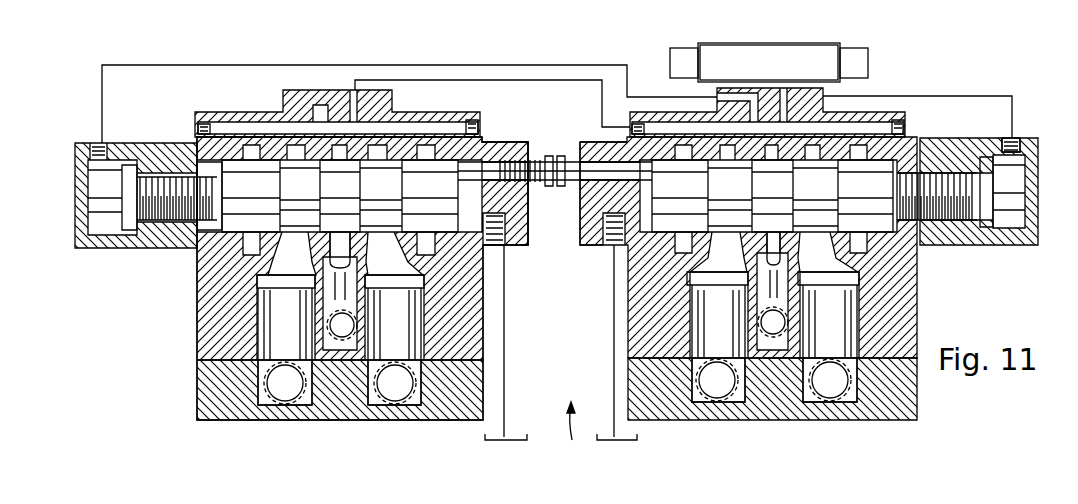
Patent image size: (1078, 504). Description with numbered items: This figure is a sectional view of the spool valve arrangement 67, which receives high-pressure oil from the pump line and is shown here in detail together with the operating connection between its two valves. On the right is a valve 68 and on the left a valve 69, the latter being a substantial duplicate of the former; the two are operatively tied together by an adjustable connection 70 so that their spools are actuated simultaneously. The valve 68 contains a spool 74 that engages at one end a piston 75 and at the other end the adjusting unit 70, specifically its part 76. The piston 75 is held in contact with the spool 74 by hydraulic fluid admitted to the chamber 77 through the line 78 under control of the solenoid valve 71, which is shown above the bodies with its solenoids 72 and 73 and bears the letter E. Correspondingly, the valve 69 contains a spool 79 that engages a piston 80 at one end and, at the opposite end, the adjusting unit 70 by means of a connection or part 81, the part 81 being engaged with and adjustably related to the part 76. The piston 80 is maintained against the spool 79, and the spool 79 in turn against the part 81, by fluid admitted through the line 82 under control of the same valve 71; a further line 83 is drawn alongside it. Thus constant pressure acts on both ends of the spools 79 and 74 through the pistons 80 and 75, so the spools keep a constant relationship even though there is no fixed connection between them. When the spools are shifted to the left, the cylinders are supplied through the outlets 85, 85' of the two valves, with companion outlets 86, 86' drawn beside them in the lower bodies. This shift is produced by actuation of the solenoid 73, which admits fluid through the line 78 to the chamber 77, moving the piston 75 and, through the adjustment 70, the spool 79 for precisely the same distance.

The spool valve arrangement 67 is at (560, 443).
The valve 68 is at (635, 328).
The valve 69 is at (470, 342).
The adjustable connection 70 is at (557, 182).
The solenoid valve 71 is at (760, 40).
The solenoid 72 is at (682, 48).
The solenoid 73 is at (858, 48).
The spool 74 is at (630, 258).
The piston 75 is at (987, 198).
The part 76 is at (590, 142).
The chamber 77 is at (1017, 173).
The line 78 is at (907, 96).
The spool 79 is at (225, 242).
The piston 80 is at (90, 195).
The connection part 81 is at (495, 162).
The line 82 is at (450, 65).
The conduit 83 is at (548, 80).
The outlet 85 is at (717, 368).
The port 86 is at (828, 368).
The outlet 85' is at (287, 371).
The port 86' is at (394, 371).
The actuator E is at (730, 43).